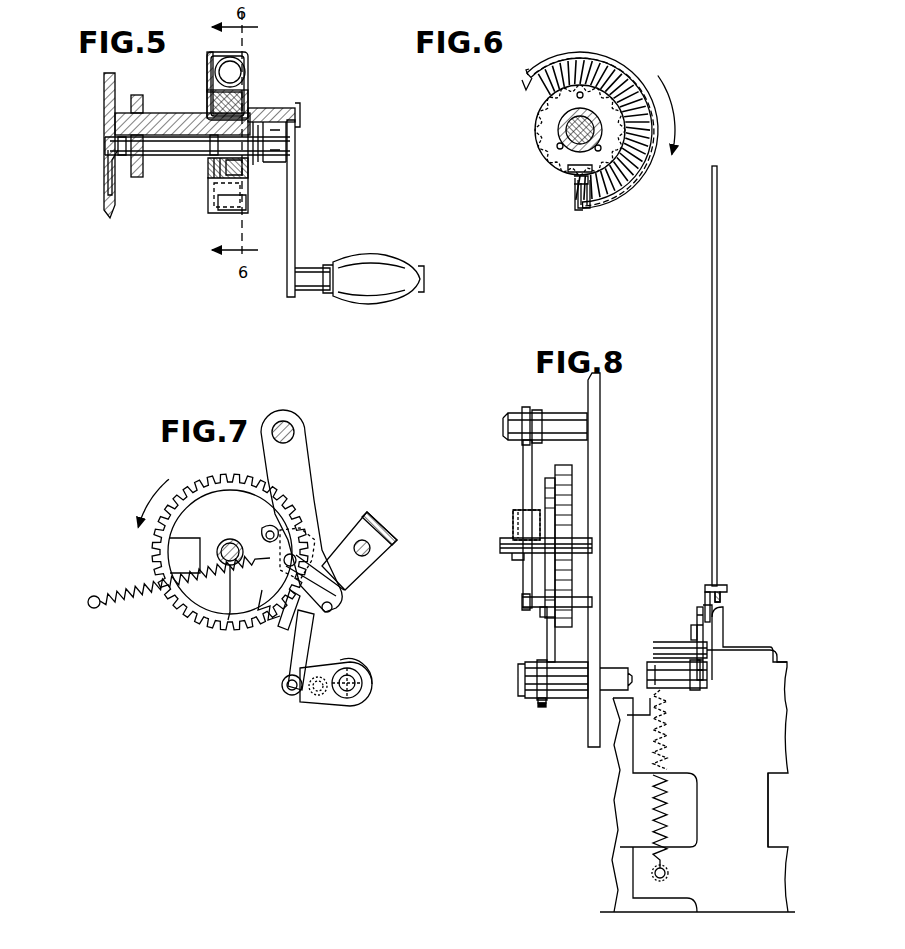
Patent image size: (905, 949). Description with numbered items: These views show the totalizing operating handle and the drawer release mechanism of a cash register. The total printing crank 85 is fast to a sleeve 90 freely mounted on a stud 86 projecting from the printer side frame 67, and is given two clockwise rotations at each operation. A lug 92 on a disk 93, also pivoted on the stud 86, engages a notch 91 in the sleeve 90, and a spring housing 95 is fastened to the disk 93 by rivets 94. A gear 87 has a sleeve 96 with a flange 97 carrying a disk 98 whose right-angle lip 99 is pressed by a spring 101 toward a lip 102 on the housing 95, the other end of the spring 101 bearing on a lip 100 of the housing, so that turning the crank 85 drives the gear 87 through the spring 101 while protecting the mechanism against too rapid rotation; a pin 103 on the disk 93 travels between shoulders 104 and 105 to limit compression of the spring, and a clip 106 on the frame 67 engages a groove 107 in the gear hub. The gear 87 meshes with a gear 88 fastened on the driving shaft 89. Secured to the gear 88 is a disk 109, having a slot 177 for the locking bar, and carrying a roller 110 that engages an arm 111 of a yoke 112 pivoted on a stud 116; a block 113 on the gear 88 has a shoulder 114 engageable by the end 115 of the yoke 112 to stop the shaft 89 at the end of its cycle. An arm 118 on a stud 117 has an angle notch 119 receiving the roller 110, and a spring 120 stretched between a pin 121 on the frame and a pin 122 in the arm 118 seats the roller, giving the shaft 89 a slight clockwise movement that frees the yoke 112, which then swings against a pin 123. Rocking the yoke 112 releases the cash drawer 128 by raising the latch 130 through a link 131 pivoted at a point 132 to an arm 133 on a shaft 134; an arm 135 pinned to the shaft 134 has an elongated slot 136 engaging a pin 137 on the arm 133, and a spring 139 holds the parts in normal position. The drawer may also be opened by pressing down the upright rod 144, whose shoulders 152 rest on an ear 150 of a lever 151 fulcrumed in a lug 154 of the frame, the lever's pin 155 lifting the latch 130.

In FIG. 5, the printer side frame 67 is at (106, 195).
In FIG. 8, the printer side frame 67 is at (600, 485).
In FIG. 5, the total printing crank 85 is at (296, 220).
In FIG. 5, the stud 86 is at (184, 120).
In FIG. 6, the stud 86 is at (572, 128).
In FIG. 5, the gear 87 is at (137, 172).
In FIG. 6, the gear 87 is at (548, 146).
In FIG. 7, the gear 88 is at (206, 626).
In FIG. 8, the gear 88 is at (560, 470).
In FIG. 7, the driving shaft 89 is at (236, 546).
In FIG. 5, the sleeve 90 is at (270, 108).
In FIG. 5, the notch 91 is at (270, 140).
In FIG. 5, the lug 92 is at (253, 150).
In FIG. 5, the disk 93 is at (250, 88).
In FIG. 6, the disk 93 is at (548, 156).
In FIG. 5, the rivets 94 is at (252, 100).
In FIG. 6, the rivets 94 is at (556, 137).
In FIG. 5, the spring housing 95 is at (250, 60).
In FIG. 6, the spring housing 95 is at (549, 60).
In FIG. 5, the sleeve 96 is at (196, 152).
In FIG. 5, the flange 97 is at (206, 162).
In FIG. 5, the disk 98 is at (207, 72).
In FIG. 5, the lip 99 is at (216, 196).
In FIG. 6, the lip 99 is at (578, 192).
In FIG. 6, the lip 100 is at (527, 82).
In FIG. 5, the spring 101 is at (220, 65).
In FIG. 6, the spring 101 is at (612, 68).
In FIG. 5, the lip 102 is at (222, 212).
In FIG. 6, the lip 102 is at (576, 206).
In FIG. 5, the pin 103 is at (212, 176).
In FIG. 6, the pin 103 is at (566, 166).
In FIG. 6, the shoulder 104 is at (546, 108).
In FIG. 6, the shoulder 105 is at (580, 178).
In FIG. 5, the clip 106 is at (124, 165).
In FIG. 5, the groove 107 is at (131, 105).
In FIG. 7, the disk 109 is at (222, 490).
In FIG. 8, the disk 109 is at (545, 480).
In FIG. 7, the roller 110 is at (266, 528).
In FIG. 7, the arm 111 is at (291, 545).
In FIG. 7, the yoke 112 is at (348, 542).
In FIG. 8, the yoke 112 is at (513, 520).
In FIG. 7, the block 113 is at (238, 612).
In FIG. 7, the shoulder 114 is at (268, 622).
In FIG. 7, the end 115 is at (287, 632).
In FIG. 8, the end 115 is at (540, 612).
In FIG. 7, the stud 116 is at (370, 554).
In FIG. 8, the stud 116 is at (500, 546).
In FIG. 7, the stud 117 is at (295, 432).
In FIG. 8, the stud 117 is at (508, 428).
In FIG. 7, the arm 118 is at (300, 466).
In FIG. 8, the arm 118 is at (523, 482).
In FIG. 7, the angle notch 119 is at (285, 556).
In FIG. 7, the spring 120 is at (124, 606).
In FIG. 7, the pin 121 is at (88, 604).
In FIG. 7, the pin 122 is at (342, 597).
In FIG. 7, the pin 123 is at (333, 612).
In FIG. 8, the pin 123 is at (522, 602).
In FIG. 8, the cash drawer 128 is at (616, 783).
In FIG. 8, the cash drawer latch 130 is at (696, 620).
In FIG. 7, the link 131 is at (307, 651).
In FIG. 8, the link 131 is at (547, 640).
In FIG. 7, the pivot point 132 is at (282, 686).
In FIG. 7, the arm 133 is at (291, 698).
In FIG. 8, the arm 133 is at (546, 703).
In FIG. 7, the shaft 134 is at (356, 683).
In FIG. 8, the shaft 134 is at (612, 668).
In FIG. 7, the arm 135 is at (348, 707).
In FIG. 8, the arm 135 is at (540, 708).
In FIG. 7, the elongated slot 136 is at (318, 692).
In FIG. 7, the pin 137 is at (312, 695).
In FIG. 8, the spring 139 is at (655, 812).
In FIG. 8, the upright rod 144 is at (712, 416).
In FIG. 8, the ear 150 is at (728, 588).
In FIG. 8, the lever 151 is at (703, 595).
In FIG. 8, the shoulders 152 is at (718, 582).
In FIG. 8, the lug 154 is at (722, 636).
In FIG. 8, the pin 155 is at (692, 630).
In FIG. 7, the slot 177 is at (178, 553).